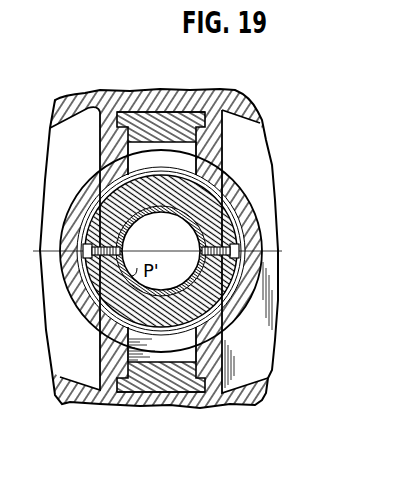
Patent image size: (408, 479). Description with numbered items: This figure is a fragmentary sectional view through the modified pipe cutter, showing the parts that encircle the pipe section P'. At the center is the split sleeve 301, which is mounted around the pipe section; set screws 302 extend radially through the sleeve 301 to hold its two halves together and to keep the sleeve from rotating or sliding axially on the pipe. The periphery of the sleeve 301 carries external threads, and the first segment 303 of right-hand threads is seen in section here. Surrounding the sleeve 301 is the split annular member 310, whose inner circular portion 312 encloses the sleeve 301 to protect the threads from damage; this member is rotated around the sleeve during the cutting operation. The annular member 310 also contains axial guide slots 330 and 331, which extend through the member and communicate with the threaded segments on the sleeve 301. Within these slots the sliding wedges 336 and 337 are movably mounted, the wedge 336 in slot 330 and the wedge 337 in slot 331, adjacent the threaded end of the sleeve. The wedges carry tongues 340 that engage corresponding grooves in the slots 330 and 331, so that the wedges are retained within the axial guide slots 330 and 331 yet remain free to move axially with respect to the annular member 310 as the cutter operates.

The split sleeve 301 is at (238, 193).
The set screws 302 is at (93, 242).
The first segment of right-hand threads 303 is at (212, 190).
The split annular member 310 is at (266, 381).
The inner circular portion 312 is at (68, 286).
The axial guide slot 330 is at (127, 148).
The axial guide slot 331 is at (128, 346).
The sliding wedge 336 is at (148, 118).
The sliding wedge 337 is at (151, 392).
The tongues 340 is at (206, 113).